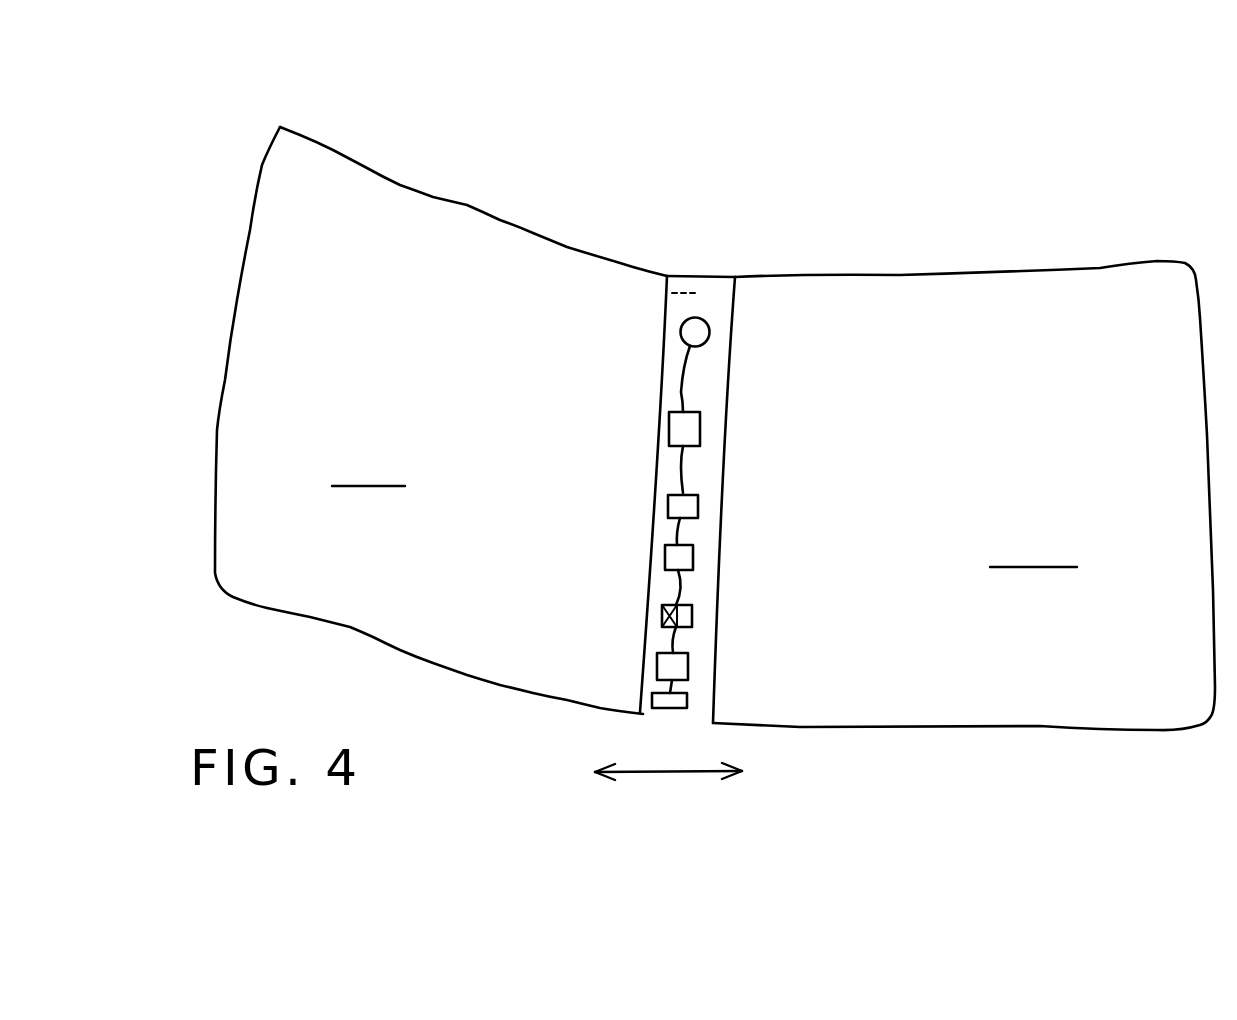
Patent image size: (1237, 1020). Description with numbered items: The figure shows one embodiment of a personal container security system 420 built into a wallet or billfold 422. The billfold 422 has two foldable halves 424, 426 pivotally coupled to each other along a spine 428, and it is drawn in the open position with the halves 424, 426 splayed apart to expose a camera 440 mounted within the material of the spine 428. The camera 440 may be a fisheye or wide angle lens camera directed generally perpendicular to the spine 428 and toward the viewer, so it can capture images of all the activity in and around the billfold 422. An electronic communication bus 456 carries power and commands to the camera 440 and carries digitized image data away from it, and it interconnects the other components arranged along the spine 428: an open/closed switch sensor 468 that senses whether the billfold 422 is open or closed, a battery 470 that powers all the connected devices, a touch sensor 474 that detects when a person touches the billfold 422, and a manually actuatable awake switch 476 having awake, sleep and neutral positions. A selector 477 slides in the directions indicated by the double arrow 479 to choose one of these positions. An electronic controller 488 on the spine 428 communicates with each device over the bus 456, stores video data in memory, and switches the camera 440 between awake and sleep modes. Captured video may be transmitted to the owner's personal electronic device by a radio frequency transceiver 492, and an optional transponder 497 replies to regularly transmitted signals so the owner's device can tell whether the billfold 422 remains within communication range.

The personal container security system 420 is at (978, 138).
The wallet or billfold 422 is at (433, 213).
The foldable half 424 is at (366, 464).
The foldable half 426 is at (964, 495).
The spine 428 is at (713, 477).
The camera 440 is at (703, 318).
The electronic communication bus 456 is at (683, 375).
The open/closed switch sensor 468 is at (702, 429).
The battery 470 is at (700, 505).
The touch sensor 474 is at (695, 557).
The awake switch 476 is at (692, 617).
The selector 477 is at (650, 618).
The double arrow 479 is at (673, 772).
The electronic controller 488 is at (688, 665).
The radio frequency transceiver 492 is at (687, 700).
The transponder 497 is at (691, 316).